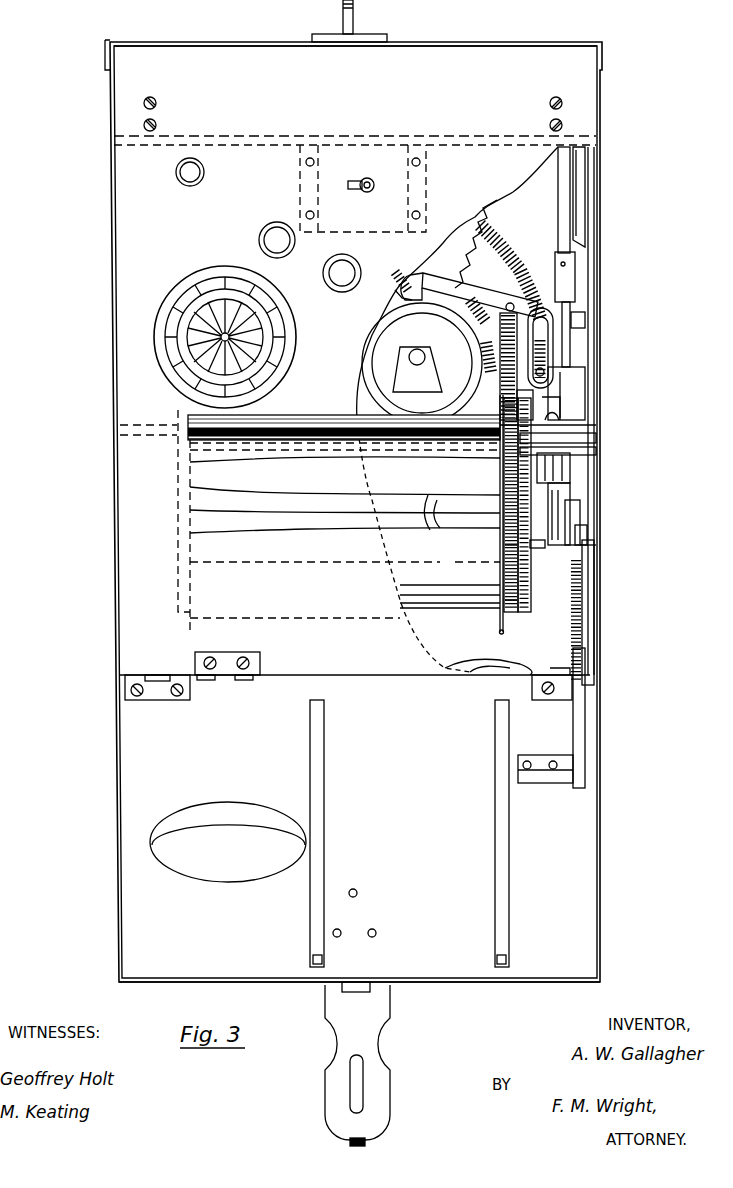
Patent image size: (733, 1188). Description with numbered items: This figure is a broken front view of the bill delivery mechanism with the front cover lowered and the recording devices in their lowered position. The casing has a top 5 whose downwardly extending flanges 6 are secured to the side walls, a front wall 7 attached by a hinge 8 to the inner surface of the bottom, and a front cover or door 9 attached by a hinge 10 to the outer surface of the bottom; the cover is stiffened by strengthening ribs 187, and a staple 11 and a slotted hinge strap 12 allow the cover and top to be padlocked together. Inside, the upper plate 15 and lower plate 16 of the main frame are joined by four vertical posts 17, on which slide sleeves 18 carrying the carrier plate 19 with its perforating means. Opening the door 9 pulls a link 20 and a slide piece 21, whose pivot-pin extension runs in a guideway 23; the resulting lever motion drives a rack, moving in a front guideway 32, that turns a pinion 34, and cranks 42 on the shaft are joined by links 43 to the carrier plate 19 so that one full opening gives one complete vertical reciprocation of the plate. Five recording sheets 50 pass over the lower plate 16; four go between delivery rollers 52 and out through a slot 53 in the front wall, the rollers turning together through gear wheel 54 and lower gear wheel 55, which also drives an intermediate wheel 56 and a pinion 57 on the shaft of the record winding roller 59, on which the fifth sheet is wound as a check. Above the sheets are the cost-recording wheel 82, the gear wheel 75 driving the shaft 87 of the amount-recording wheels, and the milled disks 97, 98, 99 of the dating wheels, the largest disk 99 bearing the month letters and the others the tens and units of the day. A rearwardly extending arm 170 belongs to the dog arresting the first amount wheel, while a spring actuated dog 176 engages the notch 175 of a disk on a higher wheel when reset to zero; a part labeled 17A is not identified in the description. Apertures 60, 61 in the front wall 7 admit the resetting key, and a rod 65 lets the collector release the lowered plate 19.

The top 5 is at (207, 41).
The flanges 6 is at (104, 60).
The front wall 7 is at (135, 570).
The hinge 8 is at (262, 672).
The front cover or door 9 is at (484, 985).
The hinge 10 is at (128, 682).
The staple 11 is at (354, 8).
The slotted hinge strap 12 is at (380, 1076).
The upper plate 15 is at (585, 142).
The lower plate 16 is at (588, 450).
The vertical posts 17 is at (566, 232).
The lever arm 17A is at (405, 300).
The sleeves 18 is at (585, 380).
The carrier plate 19 is at (587, 434).
The link 20 is at (580, 732).
The slide piece 21 is at (594, 602).
The guideway 23 is at (560, 683).
The front guideway 32 is at (555, 483).
The pinion 34 is at (570, 497).
The cranks 42 is at (575, 525).
The links 43 is at (592, 545).
The recording sheets 50 is at (430, 530).
The delivery rollers 52 is at (360, 412).
The slot 53 is at (292, 414).
The gear wheel 54 is at (585, 420).
The lower gear wheel 55 is at (570, 468).
The intermediate wheel 56 is at (513, 538).
The pinion 57 is at (518, 590).
The record winding roller 59 is at (503, 614).
The aperture 60 is at (266, 233).
The aperture 61 is at (341, 292).
The rod 65 is at (186, 172).
The gear wheel 75 is at (476, 244).
The cost-recording wheel 82 is at (512, 248).
The shaft 87 is at (417, 350).
The milled disk 97 is at (196, 337).
The milled disk 98 is at (200, 318).
The milled disk 99 is at (188, 305).
The rearwardly extending arm 170 is at (584, 320).
The notch 175 is at (395, 300).
The spring actuated dog 176 is at (487, 282).
The strengthening ribs 187 is at (495, 797).